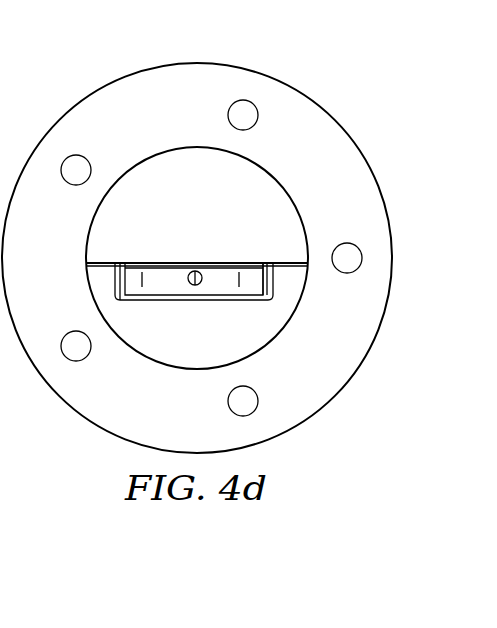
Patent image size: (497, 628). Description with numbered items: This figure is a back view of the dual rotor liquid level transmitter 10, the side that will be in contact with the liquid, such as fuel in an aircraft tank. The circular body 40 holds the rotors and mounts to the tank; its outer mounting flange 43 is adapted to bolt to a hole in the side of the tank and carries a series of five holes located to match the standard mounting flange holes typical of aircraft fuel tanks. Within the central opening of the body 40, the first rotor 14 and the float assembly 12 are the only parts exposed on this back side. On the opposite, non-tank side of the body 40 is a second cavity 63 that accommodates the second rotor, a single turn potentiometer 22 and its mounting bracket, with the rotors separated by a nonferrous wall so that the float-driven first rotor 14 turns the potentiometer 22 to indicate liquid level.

The liquid level transmitter 10 is at (295, 72).
The float assembly 12 is at (202, 278).
The first rotor 14 is at (163, 283).
The potentiometer 22 is at (182, 172).
The body 40 is at (345, 128).
The mounting flange 43 is at (54, 247).
The second cavity 63 is at (273, 282).